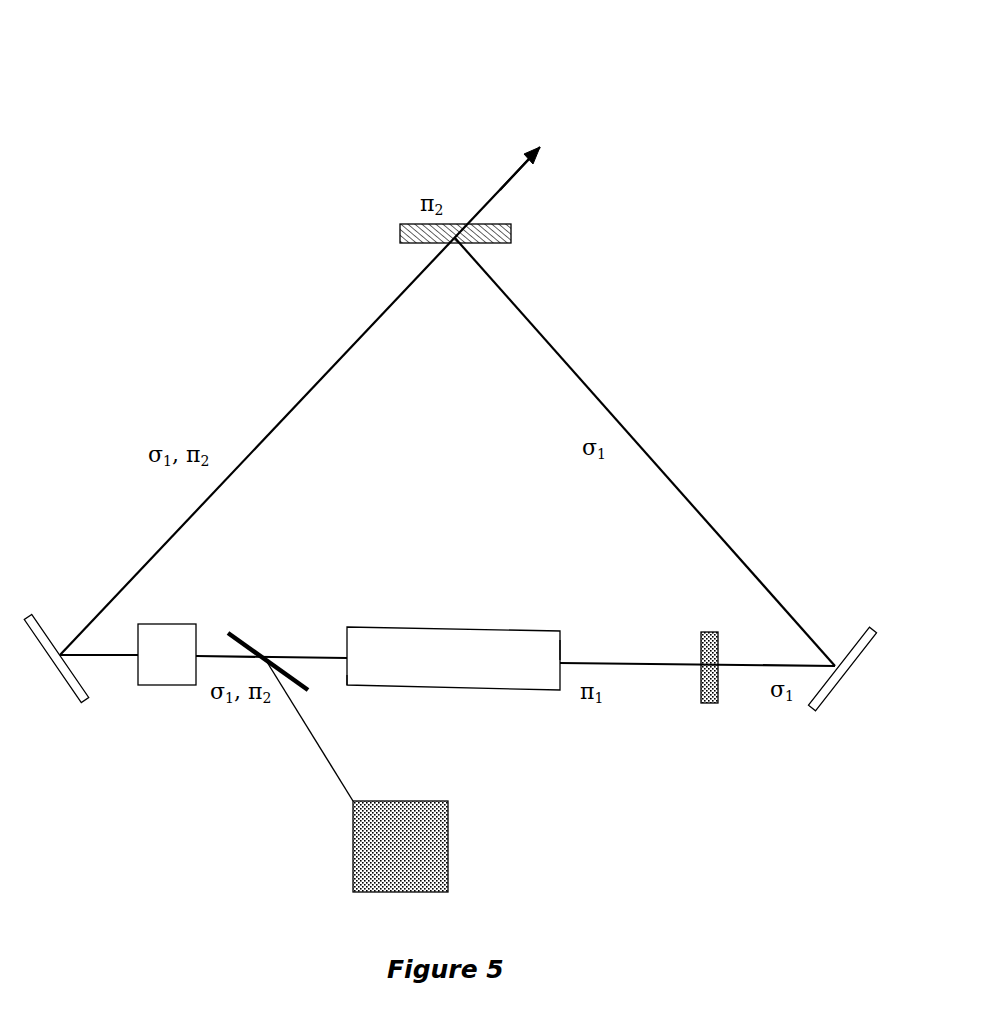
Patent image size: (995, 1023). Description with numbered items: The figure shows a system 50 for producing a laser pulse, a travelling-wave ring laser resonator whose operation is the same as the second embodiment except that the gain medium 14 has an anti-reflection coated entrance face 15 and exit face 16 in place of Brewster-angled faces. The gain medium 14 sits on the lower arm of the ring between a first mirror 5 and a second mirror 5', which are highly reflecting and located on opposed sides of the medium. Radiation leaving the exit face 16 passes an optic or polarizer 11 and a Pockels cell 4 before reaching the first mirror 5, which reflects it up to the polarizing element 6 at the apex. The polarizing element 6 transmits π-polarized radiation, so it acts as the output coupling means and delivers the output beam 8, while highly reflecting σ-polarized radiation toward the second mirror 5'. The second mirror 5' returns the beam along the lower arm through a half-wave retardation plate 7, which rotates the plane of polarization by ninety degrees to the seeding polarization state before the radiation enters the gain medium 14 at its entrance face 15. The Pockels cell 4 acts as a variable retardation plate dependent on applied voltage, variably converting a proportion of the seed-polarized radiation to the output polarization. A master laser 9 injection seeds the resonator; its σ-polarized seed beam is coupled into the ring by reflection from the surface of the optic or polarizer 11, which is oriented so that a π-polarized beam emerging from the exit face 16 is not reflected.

The system for producing a laser pulse 50 is at (320, 129).
The Pockels cell 4 is at (136, 673).
The first mirror 5 is at (56, 613).
The second mirror 5' is at (840, 595).
The polarizing element 6 is at (400, 228).
The half-wave retardation plate 7 is at (710, 632).
The output beam 8 is at (512, 182).
The master laser 9 is at (448, 840).
The optic or polarizer 11 is at (247, 643).
The gain medium 14 is at (442, 627).
The entrance face 15 is at (563, 647).
The exit face 16 is at (346, 684).